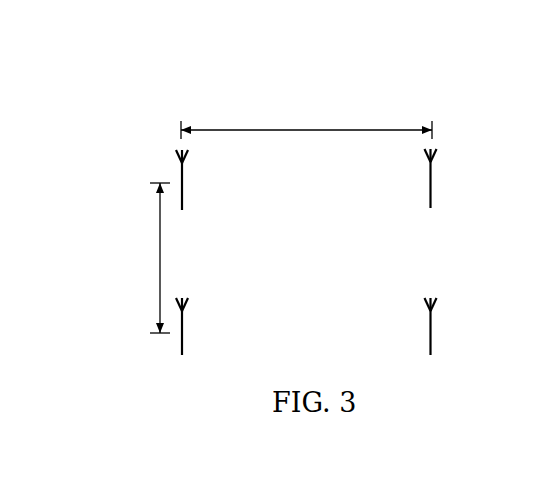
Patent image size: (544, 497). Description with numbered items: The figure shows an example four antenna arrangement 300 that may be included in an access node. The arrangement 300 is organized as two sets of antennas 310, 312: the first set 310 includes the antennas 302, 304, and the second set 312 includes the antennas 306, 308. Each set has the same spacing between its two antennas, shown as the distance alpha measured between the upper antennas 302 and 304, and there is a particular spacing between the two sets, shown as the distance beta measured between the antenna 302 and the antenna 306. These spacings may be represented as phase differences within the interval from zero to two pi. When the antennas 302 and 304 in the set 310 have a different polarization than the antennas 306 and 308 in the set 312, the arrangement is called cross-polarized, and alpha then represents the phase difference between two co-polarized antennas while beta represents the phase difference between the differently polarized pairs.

The four antenna arrangement 300 is at (325, 224).
The antenna 302 is at (207, 183).
The antenna 304 is at (457, 182).
The antenna 306 is at (207, 330).
The antenna 308 is at (457, 331).
The first set of antennas 310 is at (472, 249).
The second set of antennas 312 is at (468, 402).